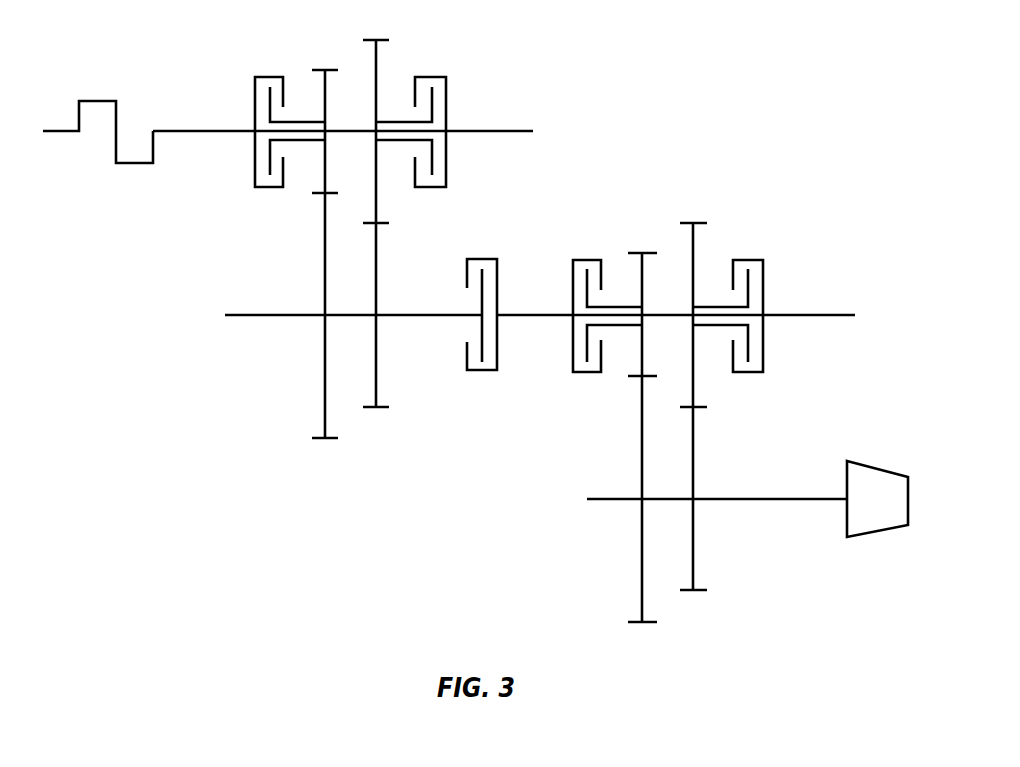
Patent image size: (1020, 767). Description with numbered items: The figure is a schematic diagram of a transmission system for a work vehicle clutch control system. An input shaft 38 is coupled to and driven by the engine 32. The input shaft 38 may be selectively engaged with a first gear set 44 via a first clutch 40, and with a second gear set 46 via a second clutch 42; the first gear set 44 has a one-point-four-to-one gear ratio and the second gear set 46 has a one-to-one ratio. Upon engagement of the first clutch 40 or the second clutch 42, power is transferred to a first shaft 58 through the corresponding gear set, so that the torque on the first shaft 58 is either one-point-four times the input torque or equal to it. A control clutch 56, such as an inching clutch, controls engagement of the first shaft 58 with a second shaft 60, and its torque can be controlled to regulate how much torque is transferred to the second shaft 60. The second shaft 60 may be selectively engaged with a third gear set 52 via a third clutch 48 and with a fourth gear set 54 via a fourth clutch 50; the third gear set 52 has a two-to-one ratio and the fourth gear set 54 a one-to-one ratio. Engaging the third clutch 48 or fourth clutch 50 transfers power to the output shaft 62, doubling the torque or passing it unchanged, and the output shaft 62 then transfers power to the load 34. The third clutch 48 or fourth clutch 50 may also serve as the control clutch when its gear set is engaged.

The engine 32 is at (97, 100).
The load 34 is at (877, 467).
The input shaft 38 is at (515, 130).
The first clutch 40 is at (261, 189).
The second clutch 42 is at (439, 190).
The first gear set 44 is at (325, 265).
The second gear set 46 is at (378, 255).
The third clutch 48 is at (583, 374).
The fourth clutch 50 is at (755, 374).
The third gear set 52 is at (642, 473).
The fourth gear set 54 is at (695, 462).
The control clutch 56 is at (482, 372).
The first shaft 58 is at (246, 318).
The second shaft 60 is at (824, 313).
The output shaft 62 is at (770, 497).